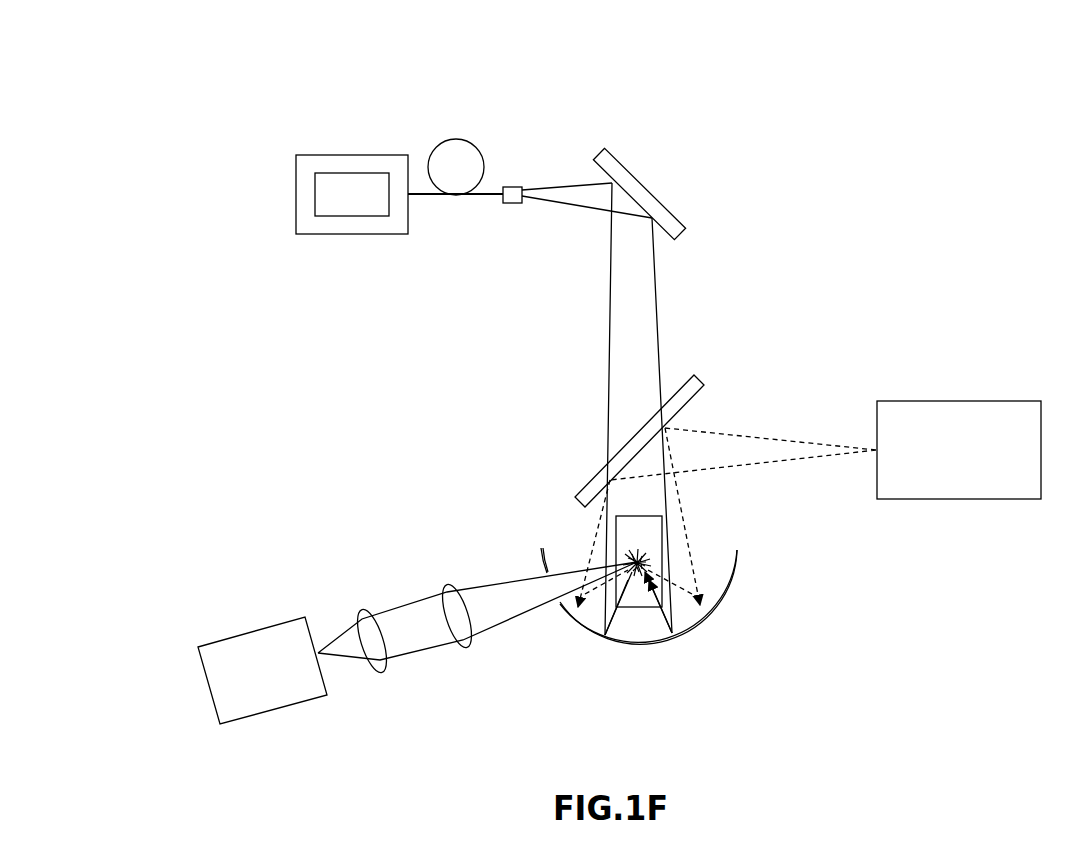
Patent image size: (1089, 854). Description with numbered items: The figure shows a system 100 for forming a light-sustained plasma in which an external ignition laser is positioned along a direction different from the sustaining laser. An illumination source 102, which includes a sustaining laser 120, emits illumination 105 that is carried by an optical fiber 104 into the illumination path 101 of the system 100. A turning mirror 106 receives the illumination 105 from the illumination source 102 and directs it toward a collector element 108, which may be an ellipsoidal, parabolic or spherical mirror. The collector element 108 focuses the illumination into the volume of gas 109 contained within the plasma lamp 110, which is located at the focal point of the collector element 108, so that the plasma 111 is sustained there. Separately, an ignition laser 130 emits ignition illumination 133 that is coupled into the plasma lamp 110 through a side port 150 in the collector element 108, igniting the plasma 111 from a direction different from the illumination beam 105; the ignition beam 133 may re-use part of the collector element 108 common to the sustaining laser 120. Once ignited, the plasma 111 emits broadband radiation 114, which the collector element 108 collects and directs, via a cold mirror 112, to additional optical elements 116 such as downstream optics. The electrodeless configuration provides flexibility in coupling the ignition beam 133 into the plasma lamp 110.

The system 100 is at (266, 80).
The illumination path 101 is at (561, 255).
The illumination source 102 is at (351, 154).
The optical fiber 104 is at (455, 139).
The illumination 105 is at (580, 209).
The turning mirror 106 is at (644, 184).
The collector element 108 is at (690, 631).
The volume of gas 109 is at (628, 545).
The plasma lamp 110 is at (640, 515).
The plasma 111 is at (636, 552).
The cold mirror 112 is at (583, 487).
The broadband radiation 114 is at (689, 542).
The additional optical elements 116 is at (825, 450).
The sustaining laser 120 is at (352, 194).
The ignition laser 130 is at (417, 643).
The ignition illumination 133 is at (401, 619).
The side port 150 is at (560, 602).